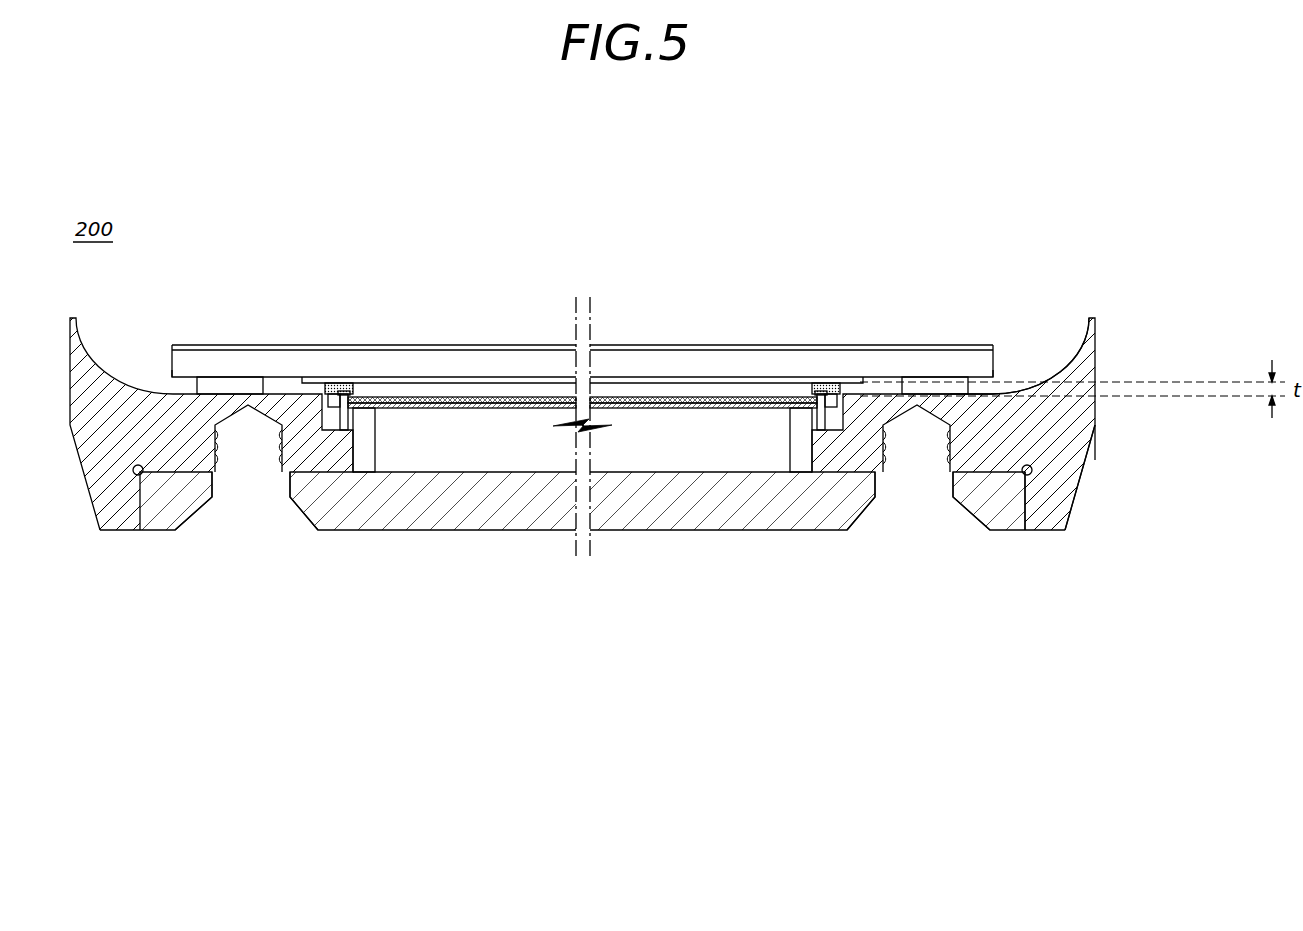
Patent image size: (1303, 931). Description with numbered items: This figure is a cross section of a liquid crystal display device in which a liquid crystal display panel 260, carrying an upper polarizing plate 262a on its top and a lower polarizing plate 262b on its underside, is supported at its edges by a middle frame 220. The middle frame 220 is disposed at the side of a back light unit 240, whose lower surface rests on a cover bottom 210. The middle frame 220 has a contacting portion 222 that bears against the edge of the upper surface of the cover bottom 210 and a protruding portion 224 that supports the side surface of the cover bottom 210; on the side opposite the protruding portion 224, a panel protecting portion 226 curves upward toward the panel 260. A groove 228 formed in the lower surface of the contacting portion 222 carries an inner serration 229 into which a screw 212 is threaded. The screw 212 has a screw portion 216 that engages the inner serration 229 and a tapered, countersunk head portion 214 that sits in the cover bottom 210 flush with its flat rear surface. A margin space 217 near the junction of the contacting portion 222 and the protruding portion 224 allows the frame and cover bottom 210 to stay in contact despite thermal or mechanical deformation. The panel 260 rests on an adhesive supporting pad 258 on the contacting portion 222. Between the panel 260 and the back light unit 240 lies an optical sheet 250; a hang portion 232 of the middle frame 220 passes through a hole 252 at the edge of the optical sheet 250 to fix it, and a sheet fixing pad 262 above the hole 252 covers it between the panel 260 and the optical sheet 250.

The cover bottom 210 is at (455, 510).
The screw 212 is at (582, 561).
The head portion 214 is at (870, 522).
The screw portion 216 is at (900, 457).
The margin space 217 is at (140, 474).
The middle frame 220 is at (1157, 520).
The contacting portion 222 is at (1010, 460).
The protruding portion 224 is at (1053, 512).
The panel protecting portion 226 is at (1078, 362).
The groove 228 is at (950, 415).
The inner serration 229 is at (993, 452).
The hang portion 232 is at (378, 412).
The back light unit 240 is at (367, 443).
The optical sheet 250 is at (513, 396).
The hole 252 is at (353, 393).
The supporting pad 258 is at (215, 378).
The liquid crystal display panel 260 is at (582, 315).
The sheet fixing pad 262 is at (337, 383).
The upper polarizing plate 262a is at (595, 340).
The lower polarizing plate 262b is at (650, 373).